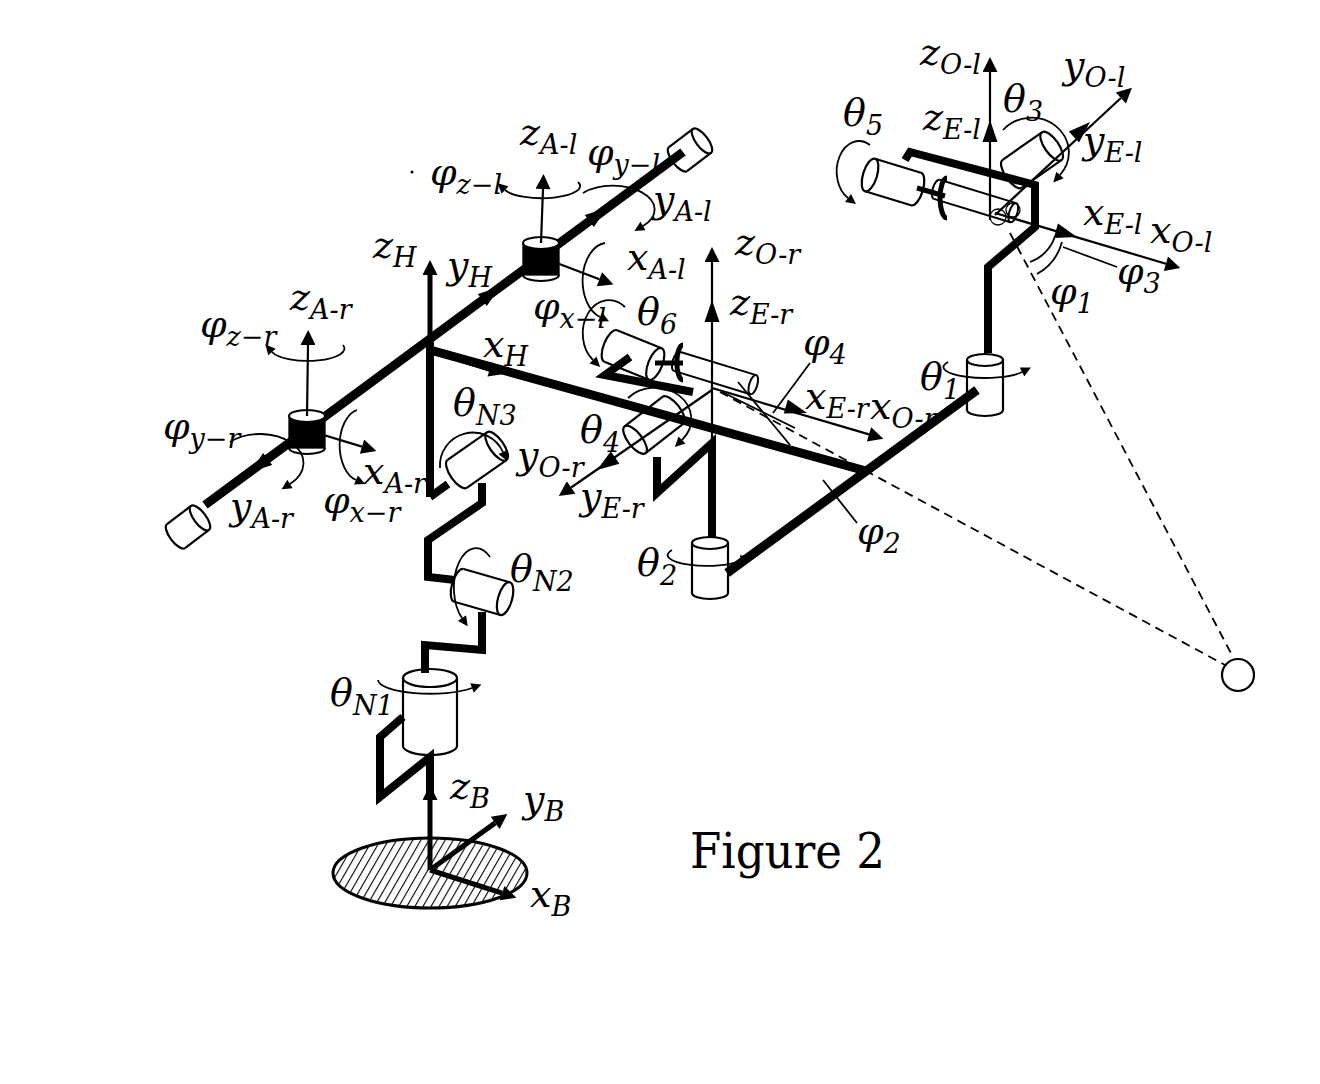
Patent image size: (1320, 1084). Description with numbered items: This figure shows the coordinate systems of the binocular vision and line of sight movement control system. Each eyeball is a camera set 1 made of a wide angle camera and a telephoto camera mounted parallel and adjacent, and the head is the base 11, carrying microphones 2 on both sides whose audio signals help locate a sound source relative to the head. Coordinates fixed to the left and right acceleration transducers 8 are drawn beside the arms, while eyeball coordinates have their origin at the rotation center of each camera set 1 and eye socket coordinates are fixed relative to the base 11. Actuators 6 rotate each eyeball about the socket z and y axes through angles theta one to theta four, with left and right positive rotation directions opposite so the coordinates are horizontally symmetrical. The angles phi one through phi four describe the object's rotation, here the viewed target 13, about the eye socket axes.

The camera set 1 is at (963, 223).
The microphone 2 is at (680, 143).
The actuator 6 is at (710, 583).
The acceleration transducer 8 is at (293, 430).
The base 11 is at (792, 533).
The target object 13 is at (1230, 710).